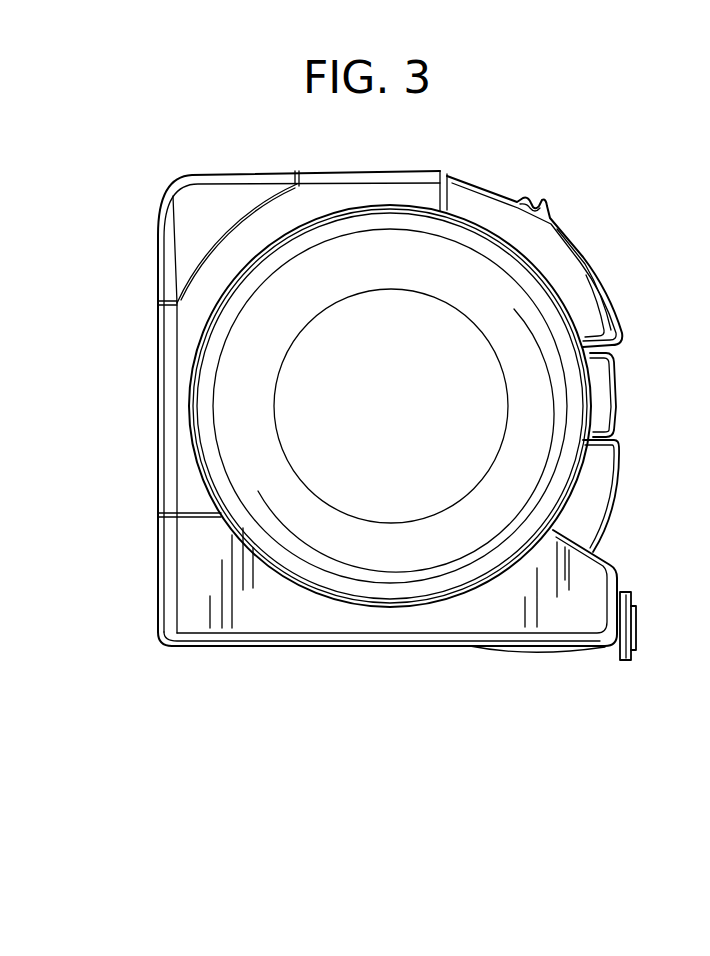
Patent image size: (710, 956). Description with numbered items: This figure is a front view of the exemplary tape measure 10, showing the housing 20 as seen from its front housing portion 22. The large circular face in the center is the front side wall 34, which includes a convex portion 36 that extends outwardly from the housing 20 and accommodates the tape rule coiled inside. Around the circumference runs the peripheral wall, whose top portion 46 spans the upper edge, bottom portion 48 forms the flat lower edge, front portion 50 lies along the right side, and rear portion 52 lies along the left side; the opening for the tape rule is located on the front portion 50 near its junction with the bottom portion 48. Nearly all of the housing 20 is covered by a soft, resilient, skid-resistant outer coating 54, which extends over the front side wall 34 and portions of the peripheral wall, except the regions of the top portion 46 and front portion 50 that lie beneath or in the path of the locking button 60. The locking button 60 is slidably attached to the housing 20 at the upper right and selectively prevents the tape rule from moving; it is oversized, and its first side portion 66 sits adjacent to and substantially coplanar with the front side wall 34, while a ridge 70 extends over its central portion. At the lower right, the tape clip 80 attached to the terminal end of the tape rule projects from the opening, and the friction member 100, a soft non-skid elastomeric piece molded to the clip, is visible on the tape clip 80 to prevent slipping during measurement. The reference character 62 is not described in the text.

The tape measure 10 is at (196, 134).
The housing 20 is at (150, 321).
The front housing portion 22 is at (185, 587).
The front side wall 34 is at (470, 622).
The convex portion 36 is at (378, 593).
The top portion 46 is at (436, 155).
The bottom portion 48 is at (401, 655).
The front portion 50 is at (628, 398).
The rear portion 52 is at (150, 458).
The outer coating 54 is at (180, 247).
The locking button 60 is at (590, 250).
The shell lip 62 is at (608, 297).
The first side portion 66 is at (593, 332).
The ridge 70 is at (535, 205).
The tape clip 80 is at (647, 596).
The friction member 100 is at (620, 656).